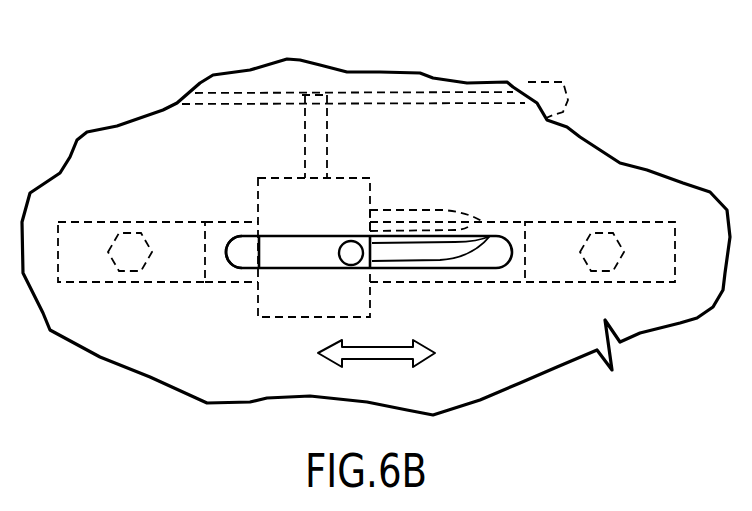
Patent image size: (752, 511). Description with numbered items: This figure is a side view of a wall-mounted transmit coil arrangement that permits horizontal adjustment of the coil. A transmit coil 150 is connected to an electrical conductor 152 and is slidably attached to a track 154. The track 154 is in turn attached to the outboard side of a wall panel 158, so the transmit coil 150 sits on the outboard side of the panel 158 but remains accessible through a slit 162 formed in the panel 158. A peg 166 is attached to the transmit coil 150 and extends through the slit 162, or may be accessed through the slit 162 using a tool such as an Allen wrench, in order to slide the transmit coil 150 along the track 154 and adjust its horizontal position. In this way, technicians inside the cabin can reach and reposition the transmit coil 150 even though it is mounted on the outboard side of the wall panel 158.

The transmit coil 150 is at (285, 252).
The electrical conductor 152 is at (568, 106).
The track 154 is at (540, 246).
The wall panel 158 is at (516, 176).
The slit 162 is at (234, 242).
The peg 166 is at (357, 262).